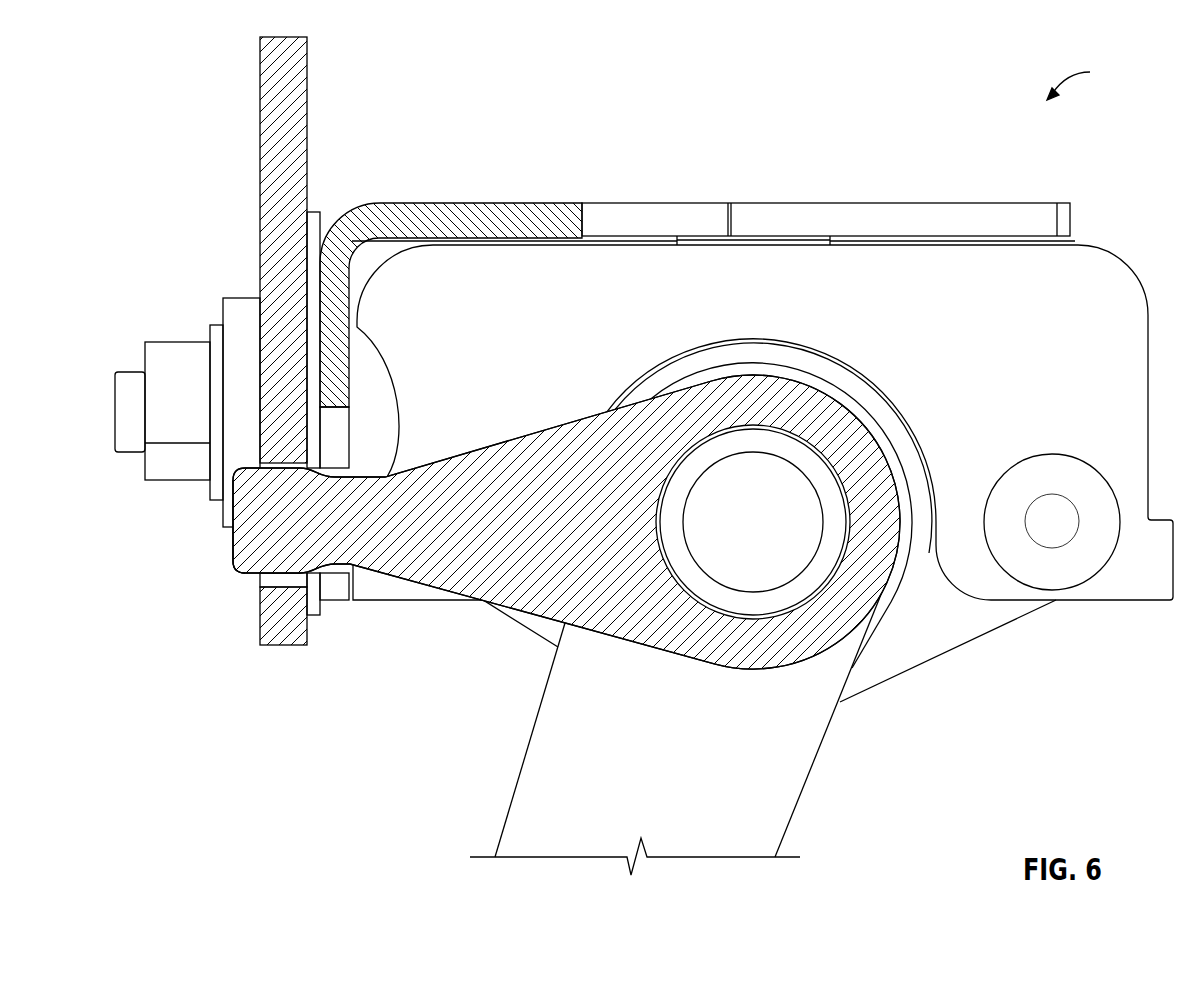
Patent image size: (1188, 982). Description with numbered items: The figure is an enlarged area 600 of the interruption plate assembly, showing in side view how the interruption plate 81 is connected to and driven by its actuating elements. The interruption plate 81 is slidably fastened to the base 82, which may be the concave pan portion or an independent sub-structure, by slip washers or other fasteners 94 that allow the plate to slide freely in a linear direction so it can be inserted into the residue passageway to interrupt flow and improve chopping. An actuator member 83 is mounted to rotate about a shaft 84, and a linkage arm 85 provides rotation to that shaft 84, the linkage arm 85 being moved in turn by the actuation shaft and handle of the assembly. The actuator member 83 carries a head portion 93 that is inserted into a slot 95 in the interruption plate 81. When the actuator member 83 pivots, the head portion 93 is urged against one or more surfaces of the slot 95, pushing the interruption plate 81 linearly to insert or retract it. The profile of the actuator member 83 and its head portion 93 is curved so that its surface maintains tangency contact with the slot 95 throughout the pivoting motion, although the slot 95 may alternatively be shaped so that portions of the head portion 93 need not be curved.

The enlarged area 600 is at (1092, 79).
The interruption plate 81 is at (288, 83).
The base 82 is at (468, 215).
The actuator member 83 is at (398, 543).
The shaft 84 is at (778, 565).
The linkage arm 85 is at (777, 763).
The head portion 93 is at (230, 540).
The fasteners 94 is at (235, 315).
The slot 95 is at (258, 577).